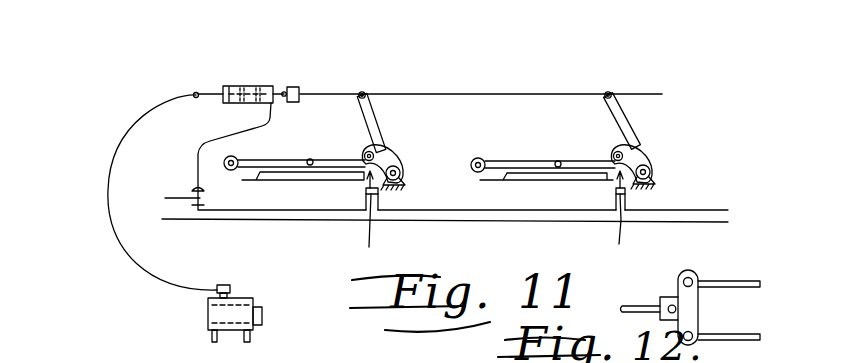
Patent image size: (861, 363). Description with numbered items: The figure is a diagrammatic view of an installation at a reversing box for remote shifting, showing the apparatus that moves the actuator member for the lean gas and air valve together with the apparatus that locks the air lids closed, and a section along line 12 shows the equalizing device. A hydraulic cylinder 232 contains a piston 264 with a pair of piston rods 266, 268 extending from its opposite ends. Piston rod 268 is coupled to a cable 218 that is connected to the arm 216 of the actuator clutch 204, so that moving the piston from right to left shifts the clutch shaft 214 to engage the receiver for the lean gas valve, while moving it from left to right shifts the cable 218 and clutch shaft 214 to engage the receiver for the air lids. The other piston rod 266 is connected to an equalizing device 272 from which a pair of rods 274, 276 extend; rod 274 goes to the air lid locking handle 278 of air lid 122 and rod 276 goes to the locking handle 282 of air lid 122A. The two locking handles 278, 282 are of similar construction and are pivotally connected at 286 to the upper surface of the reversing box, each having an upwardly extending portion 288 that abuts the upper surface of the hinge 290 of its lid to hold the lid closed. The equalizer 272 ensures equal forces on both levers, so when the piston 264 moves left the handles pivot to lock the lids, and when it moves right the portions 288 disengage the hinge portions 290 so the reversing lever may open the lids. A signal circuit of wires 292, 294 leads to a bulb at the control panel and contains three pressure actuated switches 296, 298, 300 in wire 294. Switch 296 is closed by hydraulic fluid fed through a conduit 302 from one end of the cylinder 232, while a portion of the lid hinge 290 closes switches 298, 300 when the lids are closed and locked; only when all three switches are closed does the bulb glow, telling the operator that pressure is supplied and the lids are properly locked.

In FIG. 11, the section line 12 is at (295, 110).
In FIG. 11, the air lid 122 is at (327, 184).
In FIG. 11, the air lid 122A is at (579, 178).
In FIG. 11, the actuator clutch 204 is at (253, 332).
In FIG. 11, the clutch shaft 214 is at (262, 317).
In FIG. 11, the arm 216 is at (231, 293).
In FIG. 11, the cable 218 is at (104, 205).
In FIG. 11, the hydraulic cylinder 232 is at (268, 85).
In FIG. 11, the piston 264 is at (240, 85).
In FIG. 11, the piston rod 266 is at (288, 88).
In FIG. 11, the piston rod 268 is at (206, 92).
In FIG. 11, the equalizing device 272 is at (305, 88).
In FIG. 12, the equalizing device 272 is at (677, 285).
In FIG. 11, the rod 274 is at (341, 93).
In FIG. 12, the rod 274 is at (732, 332).
In FIG. 11, the rod 276 is at (492, 93).
In FIG. 12, the rod 276 is at (717, 277).
In FIG. 11, the air lid locking handle 278 is at (375, 121).
In FIG. 11, the locking handle 282 is at (620, 118).
In FIG. 11, the pivotal connection 286 is at (402, 173).
In FIG. 11, the upwardly extending portion 288 is at (390, 158).
In FIG. 11, the hinge 290 is at (329, 163).
In FIG. 11, the wire 292 is at (510, 225).
In FIG. 11, the wire 294 is at (478, 212).
In FIG. 11, the pressure actuated switch 296 is at (202, 204).
In FIG. 11, the pressure actuated switch 298 is at (363, 220).
In FIG. 11, the pressure actuated switch 300 is at (619, 216).
In FIG. 11, the hydraulic conduit 302 is at (196, 167).